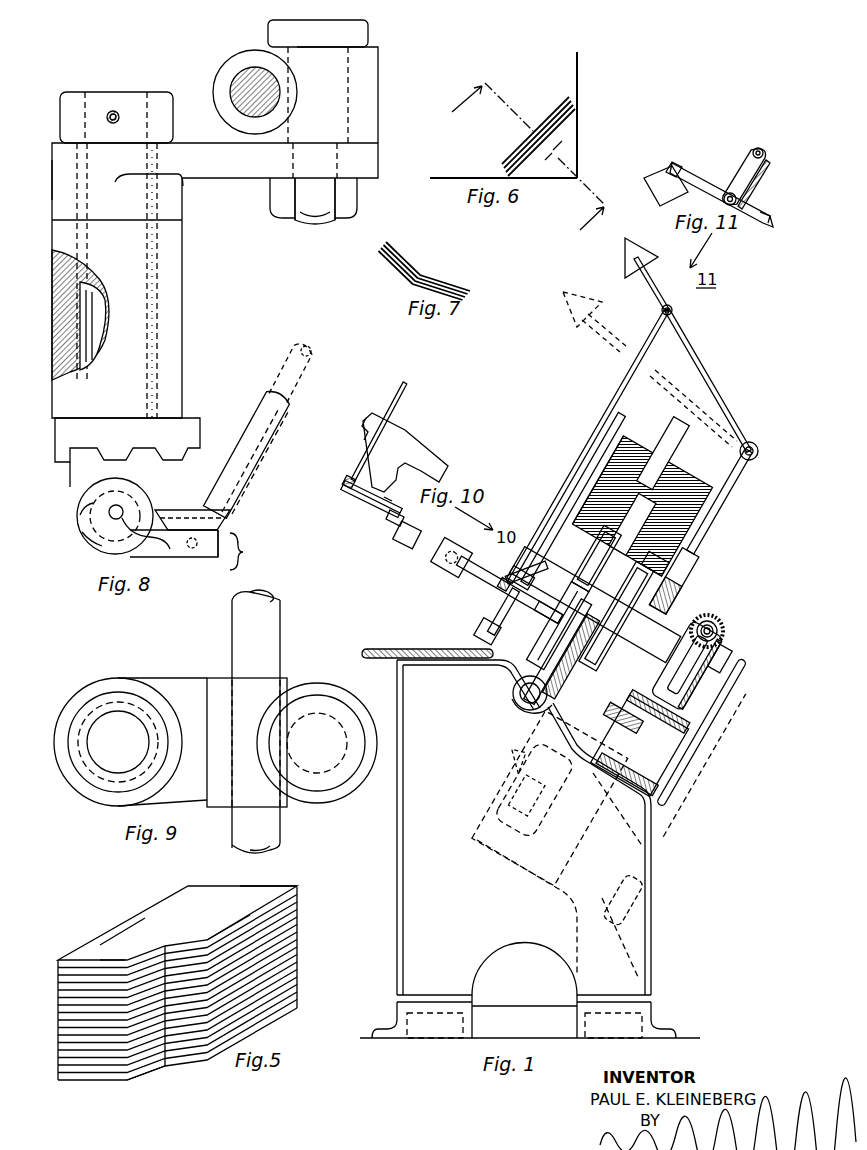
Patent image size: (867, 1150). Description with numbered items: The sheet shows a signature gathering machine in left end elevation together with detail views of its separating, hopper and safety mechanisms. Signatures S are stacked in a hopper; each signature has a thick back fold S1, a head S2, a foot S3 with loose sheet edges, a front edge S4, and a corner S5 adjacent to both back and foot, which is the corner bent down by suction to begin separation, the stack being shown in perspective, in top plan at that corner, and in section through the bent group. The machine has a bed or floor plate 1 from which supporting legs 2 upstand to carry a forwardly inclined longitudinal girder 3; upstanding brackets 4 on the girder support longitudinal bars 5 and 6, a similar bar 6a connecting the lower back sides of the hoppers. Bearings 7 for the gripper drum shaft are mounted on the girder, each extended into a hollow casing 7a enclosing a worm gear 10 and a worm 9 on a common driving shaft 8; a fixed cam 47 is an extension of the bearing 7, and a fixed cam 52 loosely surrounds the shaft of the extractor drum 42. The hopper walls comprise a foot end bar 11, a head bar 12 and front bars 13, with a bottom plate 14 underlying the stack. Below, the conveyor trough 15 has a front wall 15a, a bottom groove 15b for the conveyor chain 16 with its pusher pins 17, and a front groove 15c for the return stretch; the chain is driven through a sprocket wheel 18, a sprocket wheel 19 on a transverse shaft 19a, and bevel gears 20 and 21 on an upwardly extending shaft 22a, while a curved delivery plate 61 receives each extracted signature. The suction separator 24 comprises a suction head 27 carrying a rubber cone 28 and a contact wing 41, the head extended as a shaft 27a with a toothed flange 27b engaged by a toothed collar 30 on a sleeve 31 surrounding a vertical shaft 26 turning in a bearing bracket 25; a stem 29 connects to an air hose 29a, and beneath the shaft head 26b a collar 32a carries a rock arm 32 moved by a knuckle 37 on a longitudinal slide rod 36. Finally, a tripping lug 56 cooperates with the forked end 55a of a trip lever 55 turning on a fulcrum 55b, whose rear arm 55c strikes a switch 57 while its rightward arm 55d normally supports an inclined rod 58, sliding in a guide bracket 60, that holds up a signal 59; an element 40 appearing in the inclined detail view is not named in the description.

In FIG. 1, the bed or floor plate 1 is at (524, 1025).
In FIG. 1, the supporting legs 2 is at (780, 728).
In FIG. 1, the longitudinal girder 3 is at (642, 744).
In FIG. 1, the upstanding brackets 4 is at (673, 581).
In FIG. 1, the longitudinal bar 5 is at (722, 517).
In FIG. 1, the longitudinal bar 6 is at (662, 601).
In FIG. 1, the longitudinal bar 6a is at (562, 540).
In FIG. 6, the bearings 7 is at (525, 166).
In FIG. 1, the bearings 7 is at (595, 605).
In FIG. 1, the hollow casing 7a is at (722, 652).
In FIG. 1, the longitudinal driving shaft 8 is at (722, 625).
In FIG. 1, the worm 9 is at (718, 632).
In FIG. 1, the worm gear 10 is at (686, 665).
In FIG. 1, the upstanding bar 11 is at (650, 462).
In FIG. 1, the head bar 12 is at (650, 486).
In FIG. 1, the front bars 13 is at (744, 464).
In FIG. 1, the bottom plate 14 is at (578, 520).
In FIG. 1, the conveyor trough 15 is at (535, 668).
In FIG. 1, the upstanding front wall 15a is at (636, 661).
In FIG. 1, the bottom groove 15b is at (522, 708).
In FIG. 1, the front groove 15c is at (623, 724).
In FIG. 1, the conveyor chain 16 is at (513, 692).
In FIG. 1, the pusher pins 17 is at (563, 652).
In FIG. 1, the sprocket wheel 18 is at (701, 732).
In FIG. 1, the sprocket wheel 19 is at (655, 858).
In FIG. 1, the transverse shaft 19a is at (560, 874).
In FIG. 1, the bevel gear 20 is at (526, 795).
In FIG. 1, the bevel gear 21 is at (523, 764).
In FIG. 1, the upwardly extending shaft 22a is at (512, 800).
In FIG. 8, the suction separator 24 is at (198, 550).
In FIG. 8, the bearing bracket 25 is at (165, 280).
In FIG. 8, the vertical shaft 26 is at (58, 486).
In FIG. 9, the vertical shaft 26 is at (118, 742).
In FIG. 8, the head 26b is at (62, 106).
In FIG. 8, the suction head 27 is at (144, 509).
In FIG. 8, the sucker head shaft 27a is at (84, 543).
In FIG. 8, the toothed flange 27b is at (74, 520).
In FIG. 8, the rubber cone 28 is at (228, 520).
In FIG. 8, the tubular stem 29 is at (253, 455).
In FIG. 8, the air hose 29a is at (292, 348).
In FIG. 8, the toothed collar 30 is at (127, 440).
In FIG. 8, the vertical sleeve 31 is at (76, 296).
In FIG. 9, the vertical sleeve 31 is at (92, 727).
In FIG. 8, the rock arm 32 is at (215, 280).
In FIG. 9, the rock arm 32 is at (202, 742).
In FIG. 8, the collar 32a is at (58, 178).
In FIG. 8, the slide rod 36 is at (245, 70).
In FIG. 9, the slide rod 36 is at (256, 721).
In FIG. 8, the knuckle 37 is at (323, 122).
In FIG. 9, the knuckle 37 is at (317, 747).
In FIG. 10, the bracket 40 is at (405, 452).
In FIG. 8, the contact wing 41 is at (135, 524).
In FIG. 1, the extractor drum 42 is at (558, 626).
In FIG. 1, the fixed cam 47 is at (708, 614).
In FIG. 1, the fixed cam 52 is at (580, 575).
In FIG. 10, the trip lever 55 is at (372, 502).
In FIG. 11, the trip lever 55 is at (721, 195).
In FIG. 1, the trip lever 55 is at (562, 592).
In FIG. 11, the forked end 55a is at (768, 226).
In FIG. 1, the forked end 55a is at (545, 618).
In FIG. 11, the fulcrum 55b is at (731, 193).
In FIG. 1, the fulcrum 55b is at (507, 588).
In FIG. 10, the rear arm 55c is at (382, 532).
In FIG. 11, the rear arm 55c is at (702, 131).
In FIG. 11, the rightward arm 55d is at (752, 162).
In FIG. 1, the tripping lug 56 is at (520, 632).
In FIG. 10, the electric switch 57 is at (407, 535).
In FIG. 11, the electric switch 57 is at (666, 186).
In FIG. 1, the electric switch 57 is at (452, 554).
In FIG. 10, the inclined rod 58 is at (384, 431).
In FIG. 11, the inclined rod 58 is at (764, 153).
In FIG. 1, the inclined rod 58 is at (588, 446).
In FIG. 1, the signal 59 is at (648, 276).
In FIG. 11, the guide bracket 60 is at (759, 184).
In FIG. 1, the guide bracket 60 is at (532, 573).
In FIG. 1, the delivery plate 61 is at (520, 640).
In FIG. 5, the signatures S is at (177, 983).
In FIG. 6, the signatures S is at (503, 115).
In FIG. 7, the signatures S is at (427, 264).
In FIG. 1, the signatures S is at (612, 462).
In FIG. 5, the back fold S1 is at (242, 928).
In FIG. 5, the head S2 is at (257, 886).
In FIG. 5, the foot S3 is at (115, 960).
In FIG. 5, the front edge S4 is at (142, 922).
In FIG. 5, the corner S5 is at (172, 1072).
In FIG. 6, the corner S5 is at (574, 136).
In FIG. 7, the corner S5 is at (424, 274).
In FIG. 1, the corner S5 is at (665, 569).